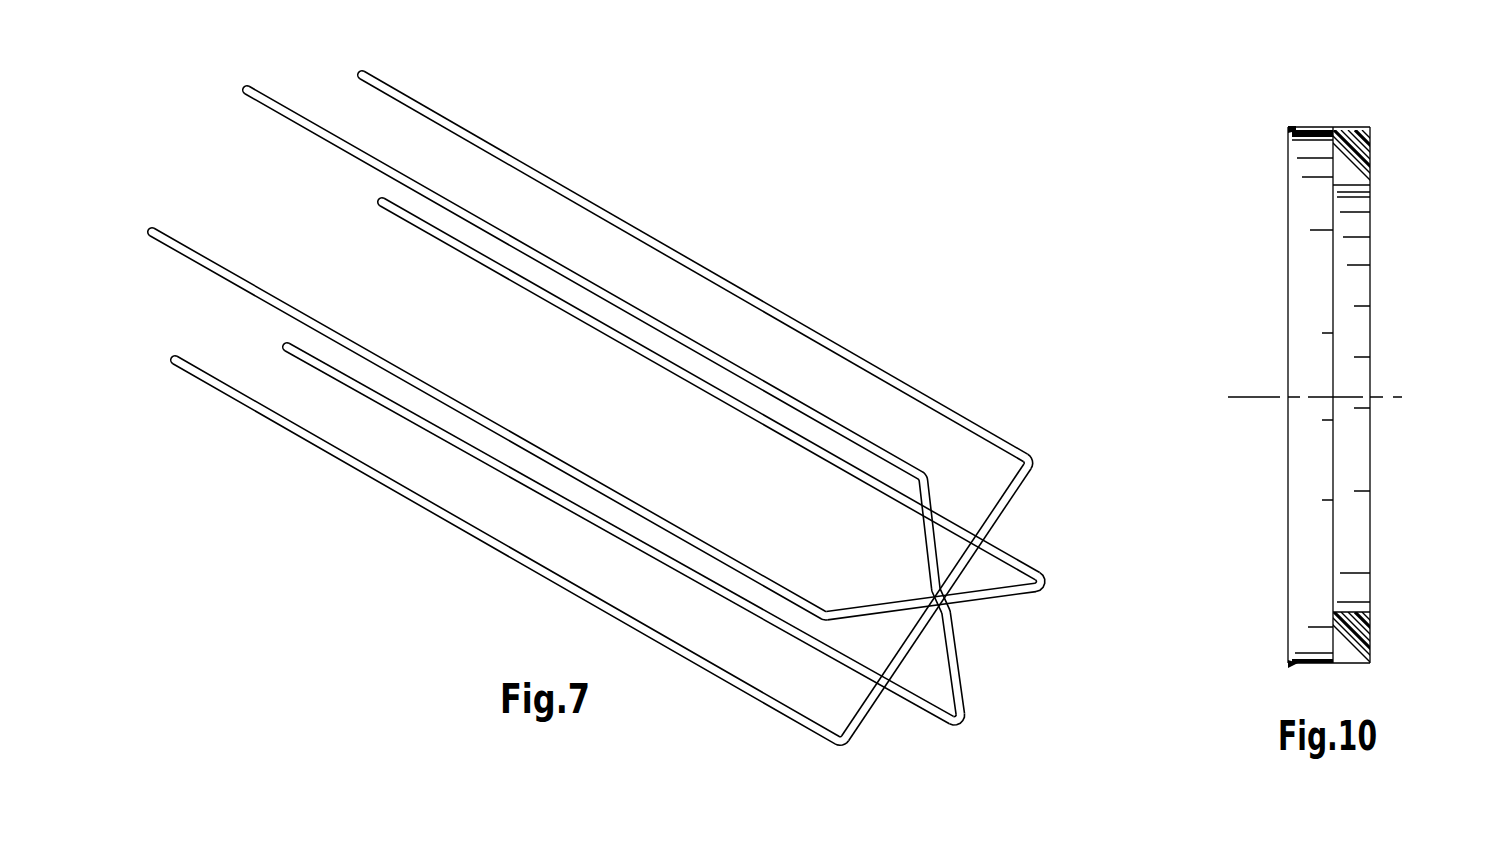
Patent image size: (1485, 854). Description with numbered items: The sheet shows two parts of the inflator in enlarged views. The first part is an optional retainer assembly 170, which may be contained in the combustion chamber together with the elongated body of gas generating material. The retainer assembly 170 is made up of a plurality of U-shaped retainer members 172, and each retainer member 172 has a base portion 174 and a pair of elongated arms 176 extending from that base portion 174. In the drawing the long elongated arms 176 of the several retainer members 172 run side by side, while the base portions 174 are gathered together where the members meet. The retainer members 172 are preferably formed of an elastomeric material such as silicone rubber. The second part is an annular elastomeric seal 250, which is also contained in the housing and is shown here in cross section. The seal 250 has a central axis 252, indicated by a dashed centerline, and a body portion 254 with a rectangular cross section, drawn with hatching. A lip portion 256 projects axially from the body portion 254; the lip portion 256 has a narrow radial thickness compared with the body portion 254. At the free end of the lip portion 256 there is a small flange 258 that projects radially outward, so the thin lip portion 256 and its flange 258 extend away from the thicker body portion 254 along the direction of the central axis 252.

In FIG. 7, the retainer assembly 170 is at (652, 408).
In FIG. 7, the U-shaped retainer member 172 is at (1028, 488).
In FIG. 7, the base portion 174 is at (998, 513).
In FIG. 7, the elongated arms 176 is at (348, 151).
In FIG. 10, the annular elastomeric seal 250 is at (1307, 361).
In FIG. 10, the central axis 252 is at (1268, 397).
In FIG. 10, the body portion 254 is at (1370, 147).
In FIG. 10, the lip portion 256 is at (1313, 128).
In FIG. 10, the flange 258 is at (1292, 126).